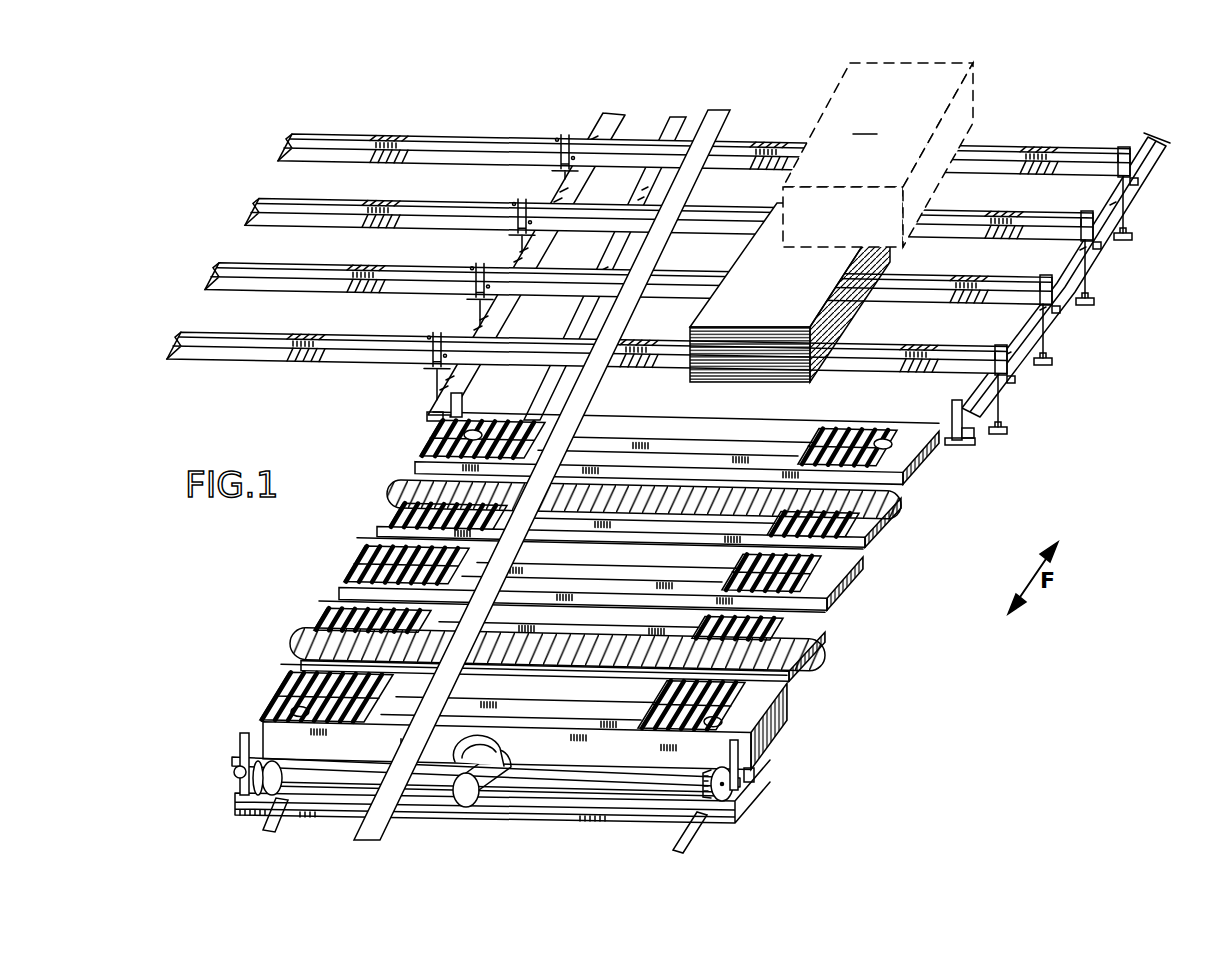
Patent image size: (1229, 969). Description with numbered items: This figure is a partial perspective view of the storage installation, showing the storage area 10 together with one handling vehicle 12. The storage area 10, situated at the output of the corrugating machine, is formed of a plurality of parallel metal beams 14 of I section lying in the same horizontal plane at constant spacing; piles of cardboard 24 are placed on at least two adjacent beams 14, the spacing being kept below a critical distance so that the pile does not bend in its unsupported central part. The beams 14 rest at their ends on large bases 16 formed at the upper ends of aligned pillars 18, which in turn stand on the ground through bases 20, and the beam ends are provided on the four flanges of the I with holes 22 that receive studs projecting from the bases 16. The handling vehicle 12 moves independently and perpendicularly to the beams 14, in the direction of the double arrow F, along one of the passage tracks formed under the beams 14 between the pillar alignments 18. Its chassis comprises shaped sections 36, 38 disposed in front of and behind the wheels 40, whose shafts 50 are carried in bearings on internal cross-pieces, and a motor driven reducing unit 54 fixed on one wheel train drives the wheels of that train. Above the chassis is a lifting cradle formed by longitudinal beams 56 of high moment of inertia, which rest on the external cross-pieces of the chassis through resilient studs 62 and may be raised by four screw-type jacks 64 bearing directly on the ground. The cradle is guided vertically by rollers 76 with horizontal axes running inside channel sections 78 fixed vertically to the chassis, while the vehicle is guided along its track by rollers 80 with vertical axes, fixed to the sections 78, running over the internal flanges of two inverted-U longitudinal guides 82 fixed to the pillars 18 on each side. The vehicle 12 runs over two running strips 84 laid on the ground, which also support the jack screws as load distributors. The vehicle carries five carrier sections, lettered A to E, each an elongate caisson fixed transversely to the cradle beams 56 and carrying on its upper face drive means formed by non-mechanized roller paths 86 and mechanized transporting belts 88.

The storage area 10 is at (1140, 277).
The handling vehicle 12 is at (868, 645).
The metal beams 14 is at (458, 210).
The bases 16 is at (1010, 372).
The pillars 18 is at (1048, 345).
The bases 20 is at (1048, 362).
The holes 22 is at (480, 276).
The piles of cardboard 24 is at (775, 280).
The shaped section 36 is at (540, 773).
The shaped section 38 is at (583, 813).
The wheels 40 is at (725, 796).
The shafts 50 is at (630, 790).
The motor driven reducing unit 54 is at (460, 802).
The longitudinal beam 56 is at (857, 577).
The studs 62 is at (753, 776).
The jacks 64 is at (270, 709).
The rollers 76 is at (958, 442).
The channel section 78 is at (238, 746).
The rollers 80 is at (235, 774).
The longitudinal guides 82 is at (435, 375).
The running strips 84 is at (268, 830).
The roller paths 86 is at (843, 597).
The transporting belts 88 is at (890, 497).